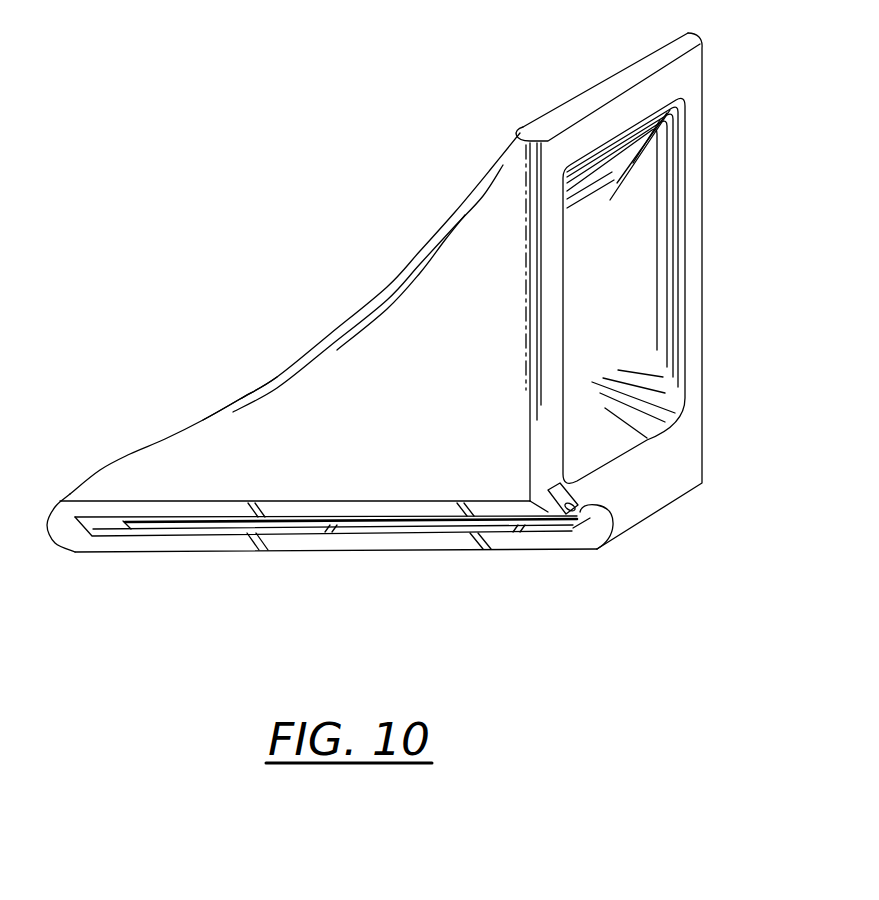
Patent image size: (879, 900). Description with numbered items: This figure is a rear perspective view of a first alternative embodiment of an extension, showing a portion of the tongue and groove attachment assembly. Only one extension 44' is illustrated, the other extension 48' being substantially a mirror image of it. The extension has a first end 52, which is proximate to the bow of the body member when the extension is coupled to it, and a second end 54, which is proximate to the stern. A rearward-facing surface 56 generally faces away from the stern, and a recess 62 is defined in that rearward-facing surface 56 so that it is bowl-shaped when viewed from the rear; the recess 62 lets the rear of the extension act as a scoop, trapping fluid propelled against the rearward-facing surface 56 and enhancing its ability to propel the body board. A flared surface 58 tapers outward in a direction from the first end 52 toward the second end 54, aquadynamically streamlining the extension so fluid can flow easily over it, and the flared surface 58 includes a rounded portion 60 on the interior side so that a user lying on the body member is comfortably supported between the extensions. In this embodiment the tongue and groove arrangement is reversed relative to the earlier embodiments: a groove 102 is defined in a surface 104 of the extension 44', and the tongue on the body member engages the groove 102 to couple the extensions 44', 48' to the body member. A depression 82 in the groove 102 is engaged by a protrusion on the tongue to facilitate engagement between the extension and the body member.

The first end 52 is at (70, 490).
The second end 54 is at (627, 72).
The rearward-facing surface 56 is at (693, 68).
The flared surface 58 is at (278, 380).
The rounded portion 60 is at (407, 318).
The recess 62 is at (643, 213).
The depression 82 is at (615, 537).
The groove 102 is at (200, 523).
The surface 104 is at (520, 543).
The extension 44' is at (295, 313).
The extension 48' is at (405, 270).